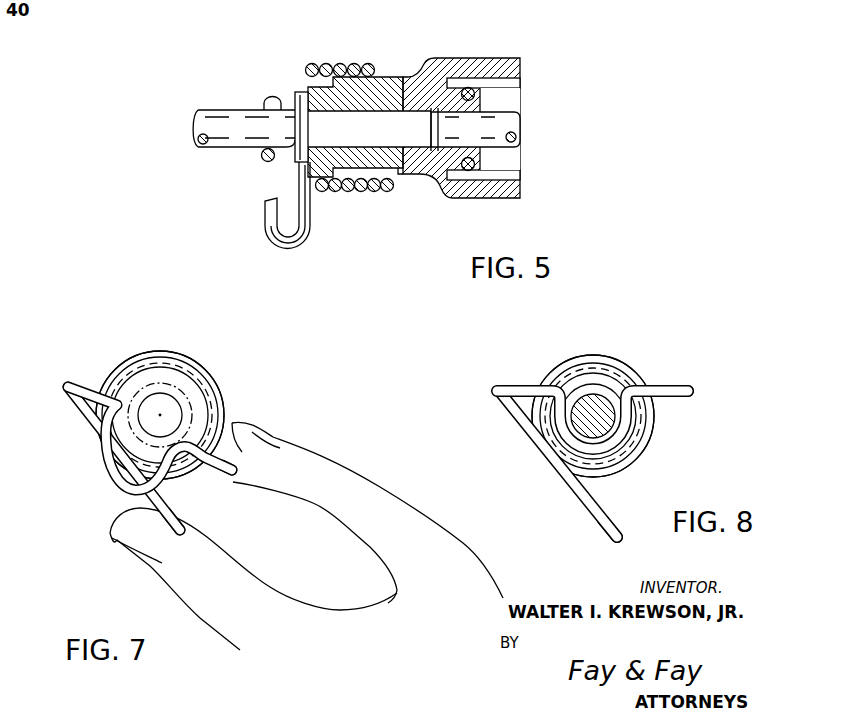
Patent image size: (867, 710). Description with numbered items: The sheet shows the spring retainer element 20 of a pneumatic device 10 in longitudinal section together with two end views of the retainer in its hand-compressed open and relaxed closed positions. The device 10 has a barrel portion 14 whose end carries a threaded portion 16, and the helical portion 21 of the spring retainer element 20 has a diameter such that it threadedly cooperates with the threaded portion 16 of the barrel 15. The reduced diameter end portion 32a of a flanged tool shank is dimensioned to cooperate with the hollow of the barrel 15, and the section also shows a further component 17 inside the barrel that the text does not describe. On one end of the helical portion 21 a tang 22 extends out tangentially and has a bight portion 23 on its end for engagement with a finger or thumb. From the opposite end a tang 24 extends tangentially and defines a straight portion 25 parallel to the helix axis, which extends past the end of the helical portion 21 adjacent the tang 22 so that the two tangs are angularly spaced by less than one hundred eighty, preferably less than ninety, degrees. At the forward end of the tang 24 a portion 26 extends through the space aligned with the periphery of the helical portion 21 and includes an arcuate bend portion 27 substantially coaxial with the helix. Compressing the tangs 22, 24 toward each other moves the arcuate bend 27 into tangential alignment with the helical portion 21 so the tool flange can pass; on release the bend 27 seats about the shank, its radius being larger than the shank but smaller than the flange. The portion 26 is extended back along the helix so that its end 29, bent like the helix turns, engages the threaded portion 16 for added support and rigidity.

In FIG. 5, the pneumatic device 10 is at (394, 164).
In FIG. 5, the barrel portion 14 is at (490, 58).
In FIG. 5, the barrel 15 is at (390, 140).
In FIG. 5, the threaded portion 16 is at (390, 67).
In FIG. 7, the threaded portion 16 is at (166, 361).
In FIG. 8, the threaded portion 16 is at (626, 372).
In FIG. 5, the inner tube 17 is at (516, 120).
In FIG. 5, the spring retainer element 20 is at (276, 179).
In FIG. 7, the spring retainer element 20 is at (183, 443).
In FIG. 8, the spring retainer element 20 is at (597, 451).
In FIG. 5, the helical portion 21 is at (323, 62).
In FIG. 7, the helical portion 21 is at (216, 380).
In FIG. 8, the helical portion 21 is at (581, 354).
In FIG. 5, the tang 22 is at (262, 213).
In FIG. 7, the tang 22 is at (184, 518).
In FIG. 8, the tang 22 is at (597, 531).
In FIG. 5, the bight portion 23 is at (284, 250).
In FIG. 7, the bight portion 23 is at (186, 534).
In FIG. 8, the bight portion 23 is at (616, 543).
In FIG. 7, the tang 24 is at (238, 456).
In FIG. 8, the tang 24 is at (679, 385).
In FIG. 5, the straight portion 25 is at (281, 96).
In FIG. 7, the straight portion 25 is at (245, 478).
In FIG. 8, the straight portion 25 is at (691, 397).
In FIG. 5, the portion 26 is at (265, 101).
In FIG. 7, the portion 26 is at (223, 468).
In FIG. 8, the portion 26 is at (521, 385).
In FIG. 5, the arcuate bend portion 27 is at (263, 159).
In FIG. 7, the arcuate bend portion 27 is at (113, 480).
In FIG. 8, the arcuate bend portion 27 is at (622, 451).
In FIG. 5, the end of extension portion 29 is at (401, 176).
In FIG. 5, the reduced diameter end portion 32a is at (362, 135).